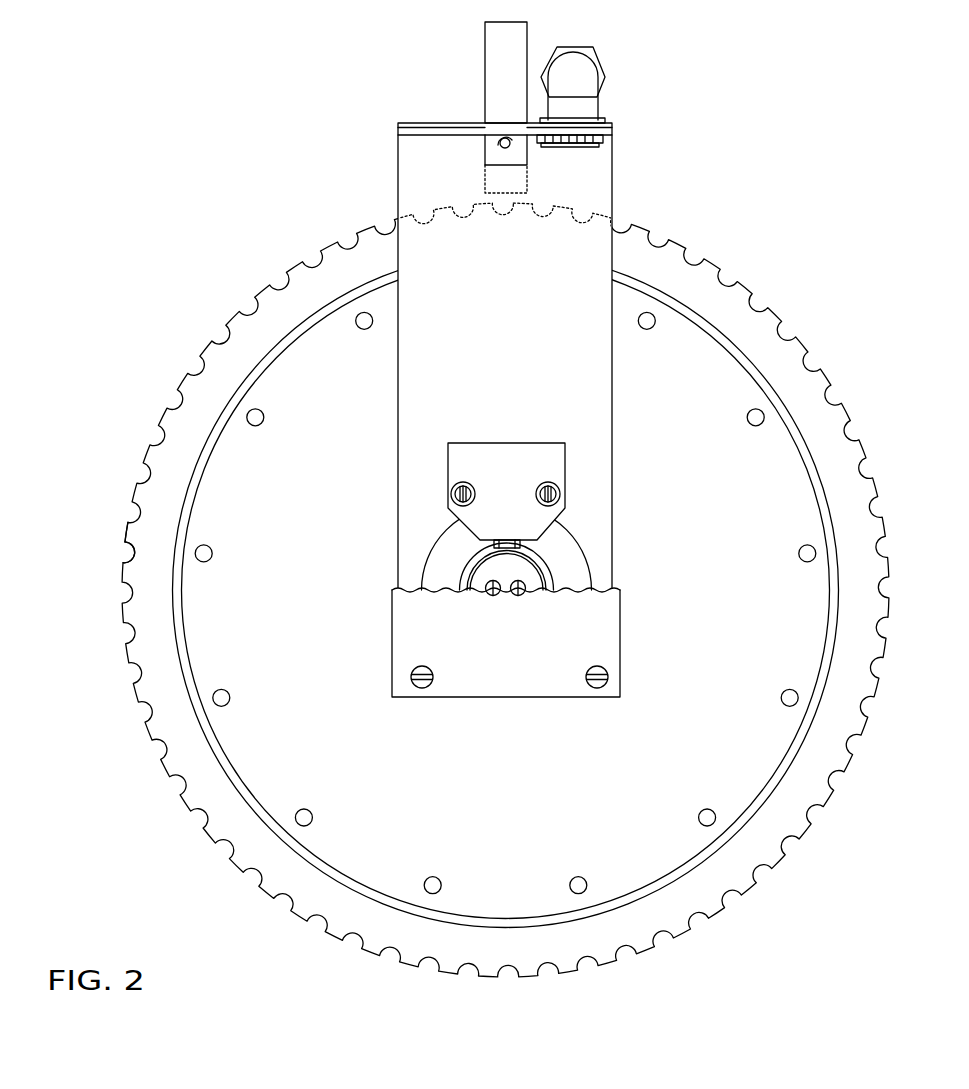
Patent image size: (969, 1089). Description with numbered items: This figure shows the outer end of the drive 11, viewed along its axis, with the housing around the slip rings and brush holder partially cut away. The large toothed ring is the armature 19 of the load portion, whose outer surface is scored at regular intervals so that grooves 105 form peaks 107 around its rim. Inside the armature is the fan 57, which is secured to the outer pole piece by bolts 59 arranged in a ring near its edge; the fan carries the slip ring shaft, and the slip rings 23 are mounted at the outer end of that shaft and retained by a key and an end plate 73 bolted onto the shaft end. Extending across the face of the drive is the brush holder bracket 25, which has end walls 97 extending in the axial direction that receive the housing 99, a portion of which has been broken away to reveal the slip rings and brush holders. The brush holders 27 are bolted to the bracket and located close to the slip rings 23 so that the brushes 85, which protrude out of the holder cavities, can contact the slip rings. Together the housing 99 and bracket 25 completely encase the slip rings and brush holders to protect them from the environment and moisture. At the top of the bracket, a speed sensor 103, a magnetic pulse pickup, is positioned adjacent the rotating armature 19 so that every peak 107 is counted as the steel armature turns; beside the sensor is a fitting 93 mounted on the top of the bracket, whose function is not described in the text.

The drive 11 is at (240, 268).
The armature 19 is at (140, 480).
The slip rings 23 is at (530, 577).
The brush holder bracket 25 is at (398, 168).
The brush holders 27 is at (545, 455).
The fan 57 is at (688, 348).
The bolts 59 is at (760, 410).
The end plate 73 is at (527, 580).
The brushes 85 is at (507, 544).
The connector 93 is at (577, 82).
The end walls 97 is at (597, 133).
The housing 99 is at (540, 683).
The speed sensor 103 is at (493, 45).
The grooves 105 is at (135, 547).
The peaks 107 is at (128, 525).